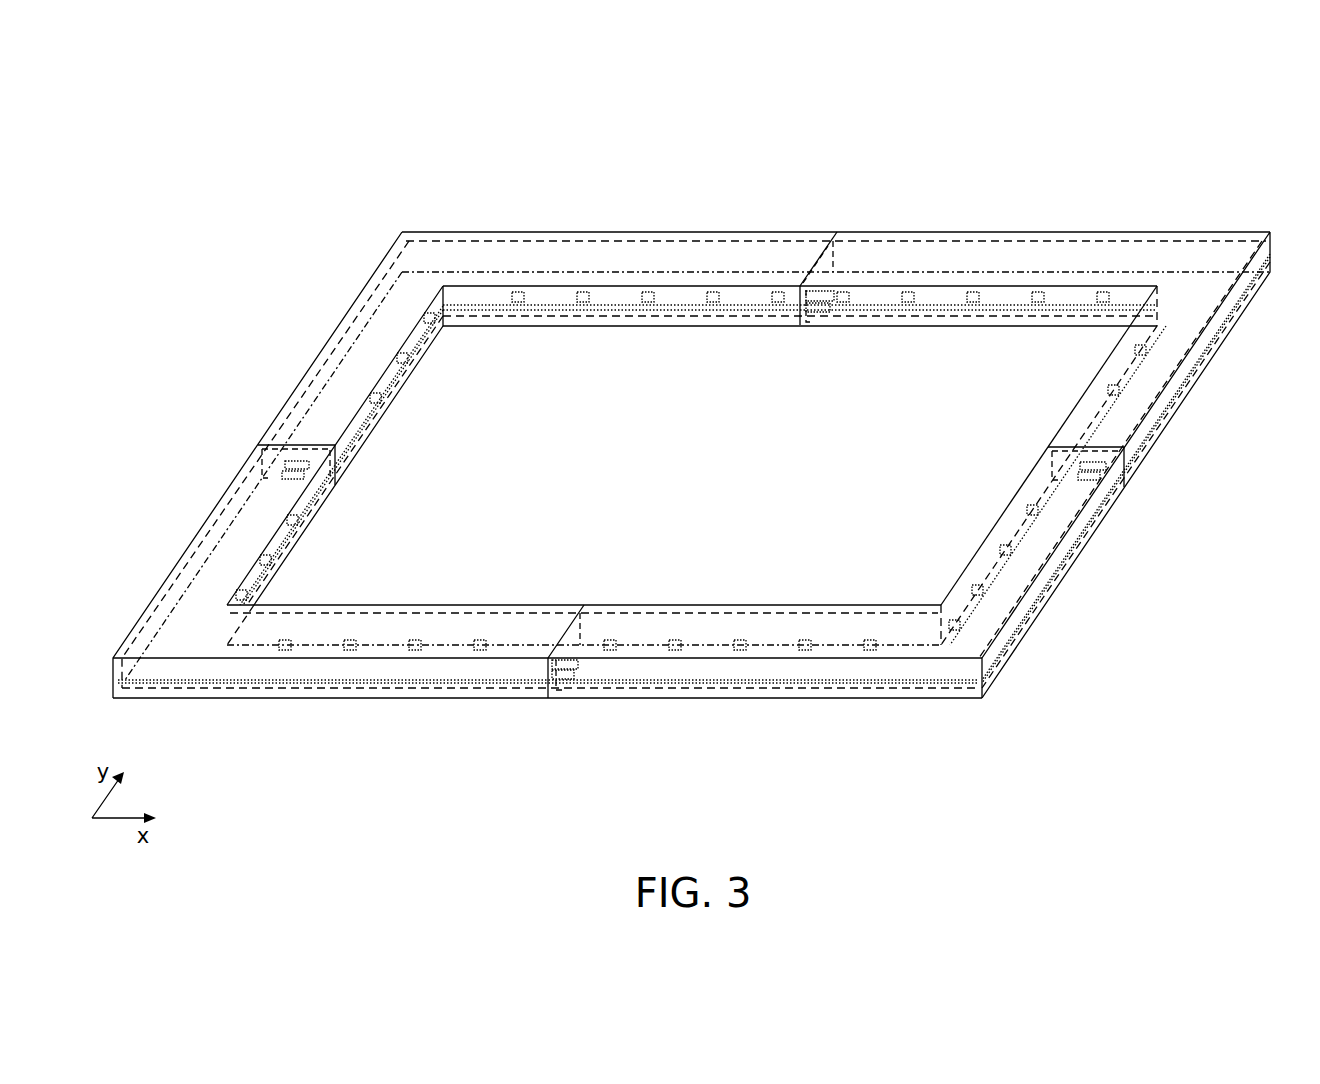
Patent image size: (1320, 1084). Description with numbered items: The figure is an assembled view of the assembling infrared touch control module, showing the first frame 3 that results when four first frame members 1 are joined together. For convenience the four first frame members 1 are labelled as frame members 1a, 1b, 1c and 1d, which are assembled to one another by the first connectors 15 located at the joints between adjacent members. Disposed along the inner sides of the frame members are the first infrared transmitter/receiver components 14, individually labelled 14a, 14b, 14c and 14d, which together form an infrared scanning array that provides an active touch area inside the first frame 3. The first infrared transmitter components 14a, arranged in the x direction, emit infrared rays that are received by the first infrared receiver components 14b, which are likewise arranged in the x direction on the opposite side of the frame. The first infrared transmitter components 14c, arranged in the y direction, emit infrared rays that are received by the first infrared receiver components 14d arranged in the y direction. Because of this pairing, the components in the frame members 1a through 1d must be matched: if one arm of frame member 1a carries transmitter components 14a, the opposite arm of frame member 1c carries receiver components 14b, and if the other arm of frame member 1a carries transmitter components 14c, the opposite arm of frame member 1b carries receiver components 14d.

The first frame 3 is at (855, 144).
The first frame member 1 is at (1272, 656).
The first frame member 1a is at (508, 232).
The first frame member 1b is at (1160, 232).
The first frame member 1c is at (218, 698).
The first frame member 1d is at (878, 698).
The first infrared transmitter/receiver component 14 is at (1292, 751).
The first infrared transmitter component 14a is at (648, 300).
The first infrared receiver component 14b is at (410, 660).
The first infrared transmitter component 14c is at (392, 362).
The first infrared receiver component 14d is at (1165, 360).
The first connector 15 is at (803, 313).